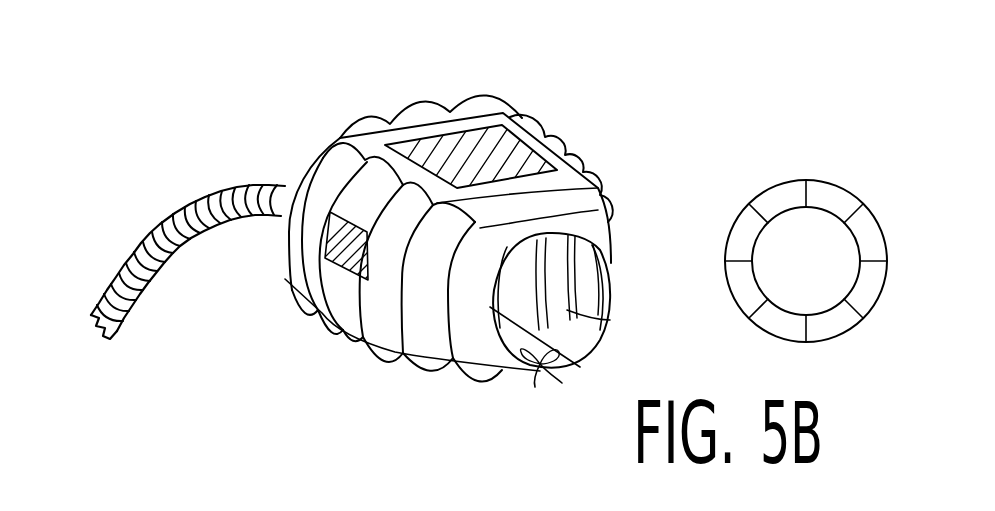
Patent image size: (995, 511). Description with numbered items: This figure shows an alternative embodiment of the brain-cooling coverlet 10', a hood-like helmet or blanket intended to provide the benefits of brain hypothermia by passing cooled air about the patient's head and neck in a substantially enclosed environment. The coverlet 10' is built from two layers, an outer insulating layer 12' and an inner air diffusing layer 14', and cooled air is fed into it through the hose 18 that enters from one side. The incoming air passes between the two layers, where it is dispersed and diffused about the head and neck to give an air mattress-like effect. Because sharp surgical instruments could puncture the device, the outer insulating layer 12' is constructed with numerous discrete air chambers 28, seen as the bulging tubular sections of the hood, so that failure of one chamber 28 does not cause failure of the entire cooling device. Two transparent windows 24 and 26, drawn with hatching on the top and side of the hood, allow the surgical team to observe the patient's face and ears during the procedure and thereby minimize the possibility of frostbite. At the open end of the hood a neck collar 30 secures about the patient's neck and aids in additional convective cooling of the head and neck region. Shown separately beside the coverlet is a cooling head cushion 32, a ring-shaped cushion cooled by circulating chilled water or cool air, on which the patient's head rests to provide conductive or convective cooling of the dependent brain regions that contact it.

The coverlet 10' is at (379, 225).
The outer insulating layer 12' is at (580, 288).
The inner air diffusing layer 14' is at (472, 333).
The hose 18 is at (177, 200).
The transparent window 24 is at (510, 153).
The transparent window 26 is at (300, 276).
The discrete air chamber 28 is at (362, 123).
The neck collar 30 is at (435, 335).
The cooling head cushion 32 is at (829, 176).